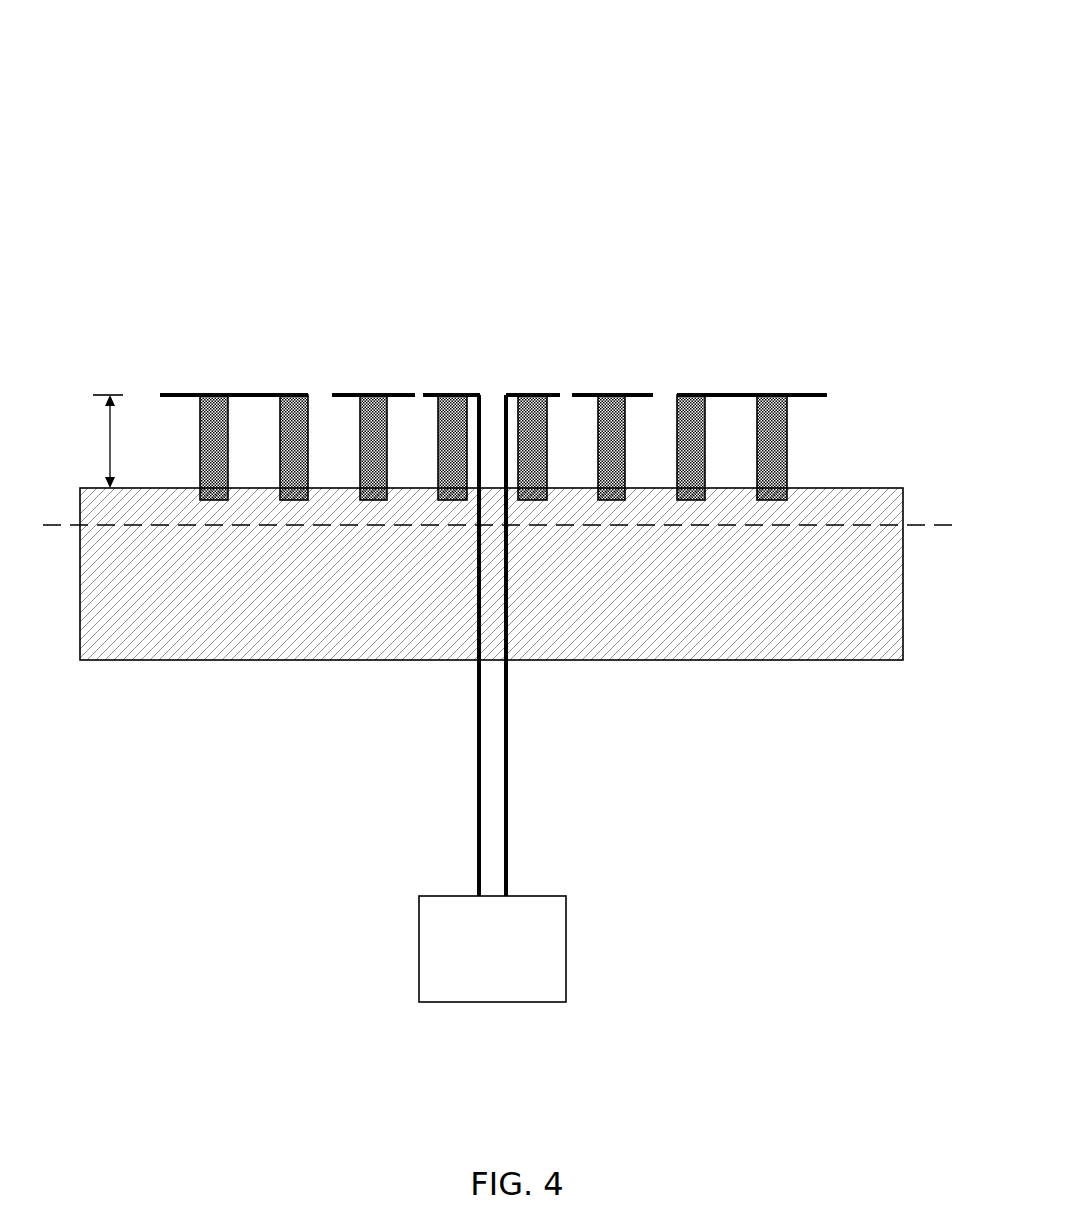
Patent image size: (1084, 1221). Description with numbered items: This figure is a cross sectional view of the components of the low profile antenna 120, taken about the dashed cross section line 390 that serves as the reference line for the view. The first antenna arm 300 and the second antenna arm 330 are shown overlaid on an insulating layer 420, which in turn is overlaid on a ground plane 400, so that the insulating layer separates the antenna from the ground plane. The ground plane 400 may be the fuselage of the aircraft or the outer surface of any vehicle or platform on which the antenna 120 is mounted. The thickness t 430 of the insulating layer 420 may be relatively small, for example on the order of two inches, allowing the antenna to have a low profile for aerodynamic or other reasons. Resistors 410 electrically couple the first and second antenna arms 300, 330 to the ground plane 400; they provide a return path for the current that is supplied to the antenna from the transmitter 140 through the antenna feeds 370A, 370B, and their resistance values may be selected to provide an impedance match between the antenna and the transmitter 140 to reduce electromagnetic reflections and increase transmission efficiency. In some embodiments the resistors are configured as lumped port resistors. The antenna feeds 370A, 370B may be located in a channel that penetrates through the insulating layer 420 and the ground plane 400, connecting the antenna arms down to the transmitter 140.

The low profile antenna 120 is at (493, 201).
The RF front end 140 is at (492, 949).
The first antenna arm 300 is at (345, 395).
The second antenna arm 330 is at (185, 395).
The antenna feed 370A is at (530, 782).
The antenna feed 370B is at (455, 782).
The cross section line 390 is at (503, 543).
The ground plane 400 is at (267, 633).
The resistors 410 is at (692, 488).
The insulating layer 420 is at (822, 440).
The thickness t 430 is at (95, 441).